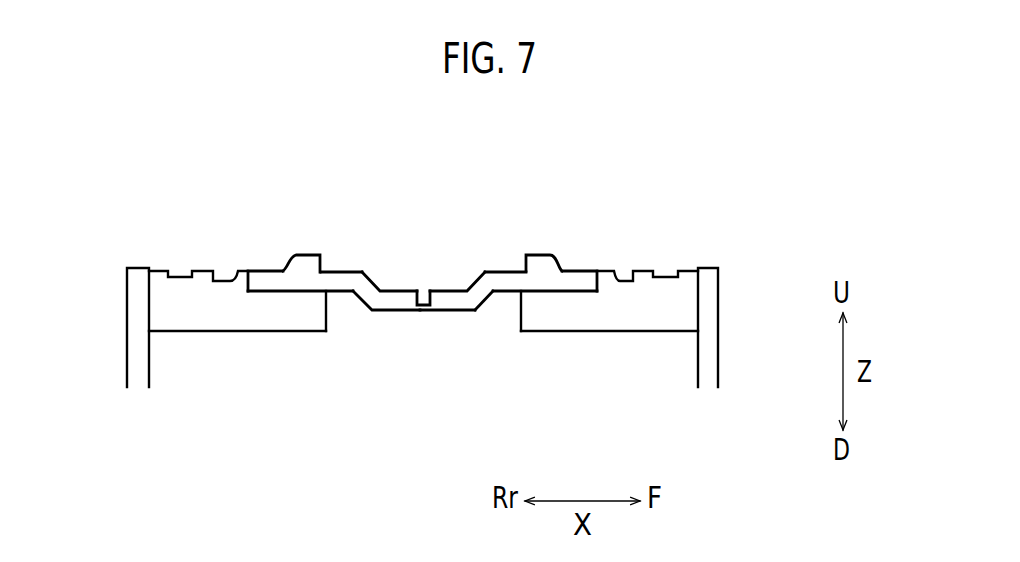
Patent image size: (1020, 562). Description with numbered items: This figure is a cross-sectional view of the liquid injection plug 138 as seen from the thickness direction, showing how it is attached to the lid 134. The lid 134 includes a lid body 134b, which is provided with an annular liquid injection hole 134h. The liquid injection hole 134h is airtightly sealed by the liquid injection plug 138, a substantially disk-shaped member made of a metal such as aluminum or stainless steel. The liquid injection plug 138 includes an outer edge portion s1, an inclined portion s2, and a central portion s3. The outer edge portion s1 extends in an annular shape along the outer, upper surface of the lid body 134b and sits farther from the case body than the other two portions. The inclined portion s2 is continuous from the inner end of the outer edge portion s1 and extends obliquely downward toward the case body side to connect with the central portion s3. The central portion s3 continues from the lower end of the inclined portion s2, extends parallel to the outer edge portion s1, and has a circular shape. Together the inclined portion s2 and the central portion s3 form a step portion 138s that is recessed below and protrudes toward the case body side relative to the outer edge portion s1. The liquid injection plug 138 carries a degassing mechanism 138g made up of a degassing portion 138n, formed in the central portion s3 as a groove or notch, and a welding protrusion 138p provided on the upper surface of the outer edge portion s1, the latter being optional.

The lid 134 is at (432, 289).
The lid body 134b is at (228, 315).
The liquid injection hole 134h is at (328, 310).
The liquid injection plug 138 is at (440, 304).
The welding protrusion 138p is at (308, 254).
The degassing portion 138n is at (417, 295).
The degassing mechanism 138g is at (502, 203).
The step portion 138s is at (454, 382).
The outer edge portion s1 is at (540, 280).
The inclined portion s2 is at (482, 297).
The central portion s3 is at (447, 305).